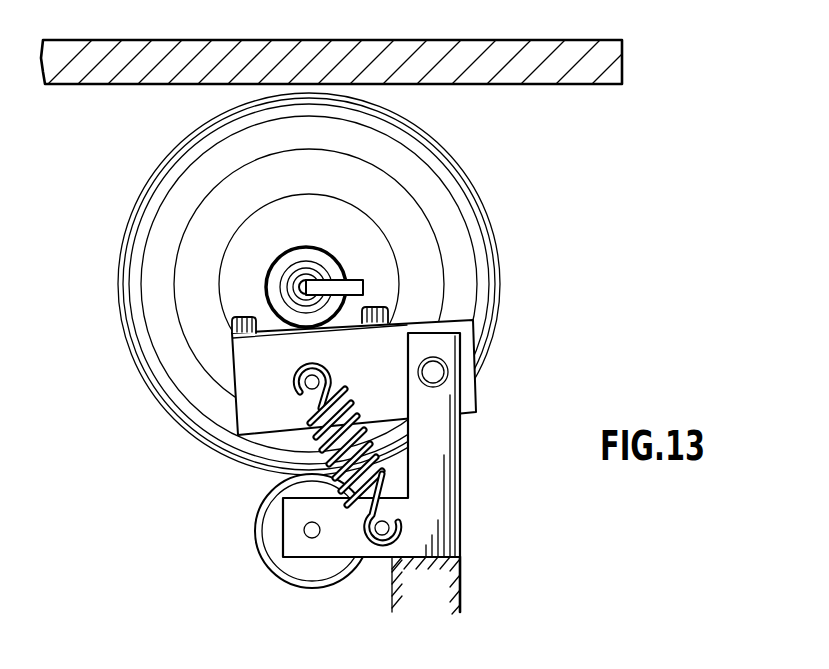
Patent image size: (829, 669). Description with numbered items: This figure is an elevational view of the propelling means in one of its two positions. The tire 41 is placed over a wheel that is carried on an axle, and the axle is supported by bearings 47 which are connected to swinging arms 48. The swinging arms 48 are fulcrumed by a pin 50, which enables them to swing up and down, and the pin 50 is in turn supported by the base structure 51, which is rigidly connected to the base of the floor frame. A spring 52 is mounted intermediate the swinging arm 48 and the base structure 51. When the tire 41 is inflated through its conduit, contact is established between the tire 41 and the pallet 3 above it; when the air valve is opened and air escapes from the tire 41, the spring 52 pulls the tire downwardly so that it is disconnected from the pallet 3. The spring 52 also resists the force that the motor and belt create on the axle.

The pallet 3 is at (603, 42).
The tire 41 is at (138, 205).
The bearings 47 is at (323, 267).
The swinging arms 48 is at (255, 402).
The pin 50 is at (446, 358).
The base structure 51 is at (442, 498).
The spring 52 is at (285, 433).